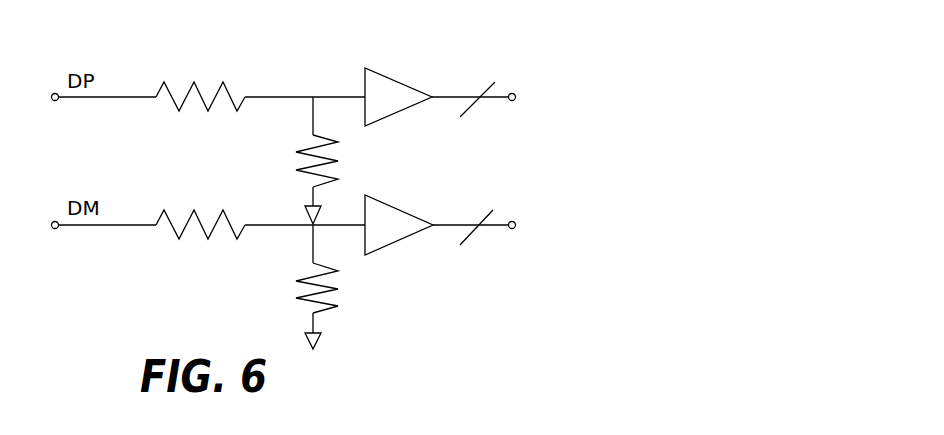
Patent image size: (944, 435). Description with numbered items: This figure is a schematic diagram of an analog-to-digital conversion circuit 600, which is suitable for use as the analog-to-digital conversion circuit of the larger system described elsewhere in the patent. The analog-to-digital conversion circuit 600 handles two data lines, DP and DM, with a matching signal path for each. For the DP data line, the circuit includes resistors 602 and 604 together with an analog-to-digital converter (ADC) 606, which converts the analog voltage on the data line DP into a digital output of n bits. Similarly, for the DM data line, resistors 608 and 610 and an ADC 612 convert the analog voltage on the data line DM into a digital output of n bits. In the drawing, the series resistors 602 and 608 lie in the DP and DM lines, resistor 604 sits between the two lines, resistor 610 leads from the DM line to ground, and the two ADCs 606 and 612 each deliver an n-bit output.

The analog-to-digital conversion circuit 600 is at (551, 42).
The resistor 602 is at (207, 82).
The resistor 604 is at (297, 163).
The analog-to-digital converter (ADC) 606 is at (396, 80).
The resistor 608 is at (207, 210).
The resistor 610 is at (297, 292).
The analog-to-digital converter (ADC) 612 is at (395, 205).